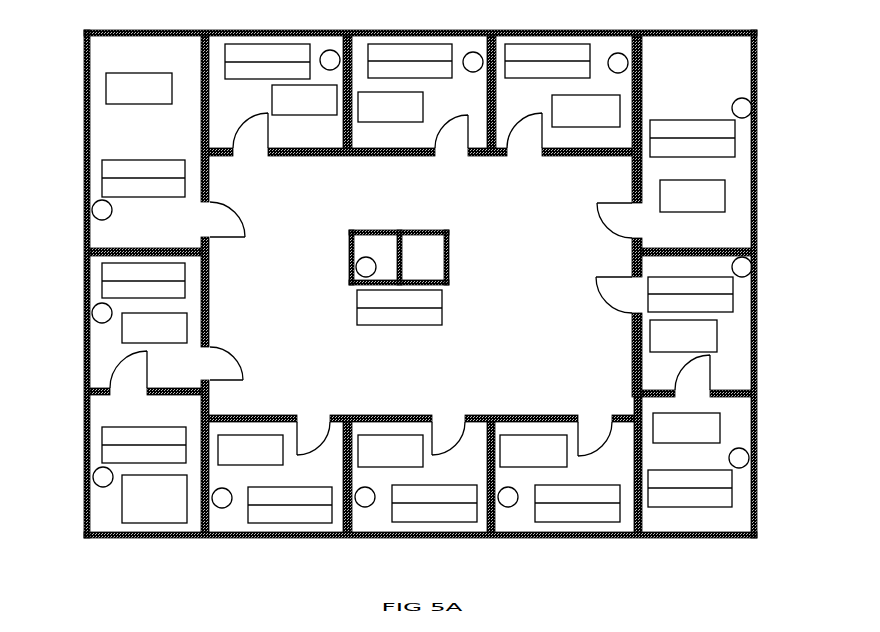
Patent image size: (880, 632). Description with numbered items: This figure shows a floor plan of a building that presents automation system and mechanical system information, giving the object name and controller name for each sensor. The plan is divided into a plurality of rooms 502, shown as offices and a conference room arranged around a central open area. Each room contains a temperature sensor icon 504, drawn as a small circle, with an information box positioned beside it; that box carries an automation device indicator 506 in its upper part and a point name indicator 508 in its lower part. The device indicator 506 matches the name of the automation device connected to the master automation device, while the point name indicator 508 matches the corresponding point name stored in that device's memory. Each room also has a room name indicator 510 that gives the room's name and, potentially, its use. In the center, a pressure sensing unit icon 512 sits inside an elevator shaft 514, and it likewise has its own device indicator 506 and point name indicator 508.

The room 502 is at (118, 130).
The temperature sensor icon 504 is at (89, 210).
The automation device indicator 506 is at (100, 172).
The point name indicator 508 is at (212, 190).
The room name indicator 510 is at (104, 90).
The pressure sensing unit icon 512 is at (354, 267).
The elevator shaft 514 is at (352, 238).